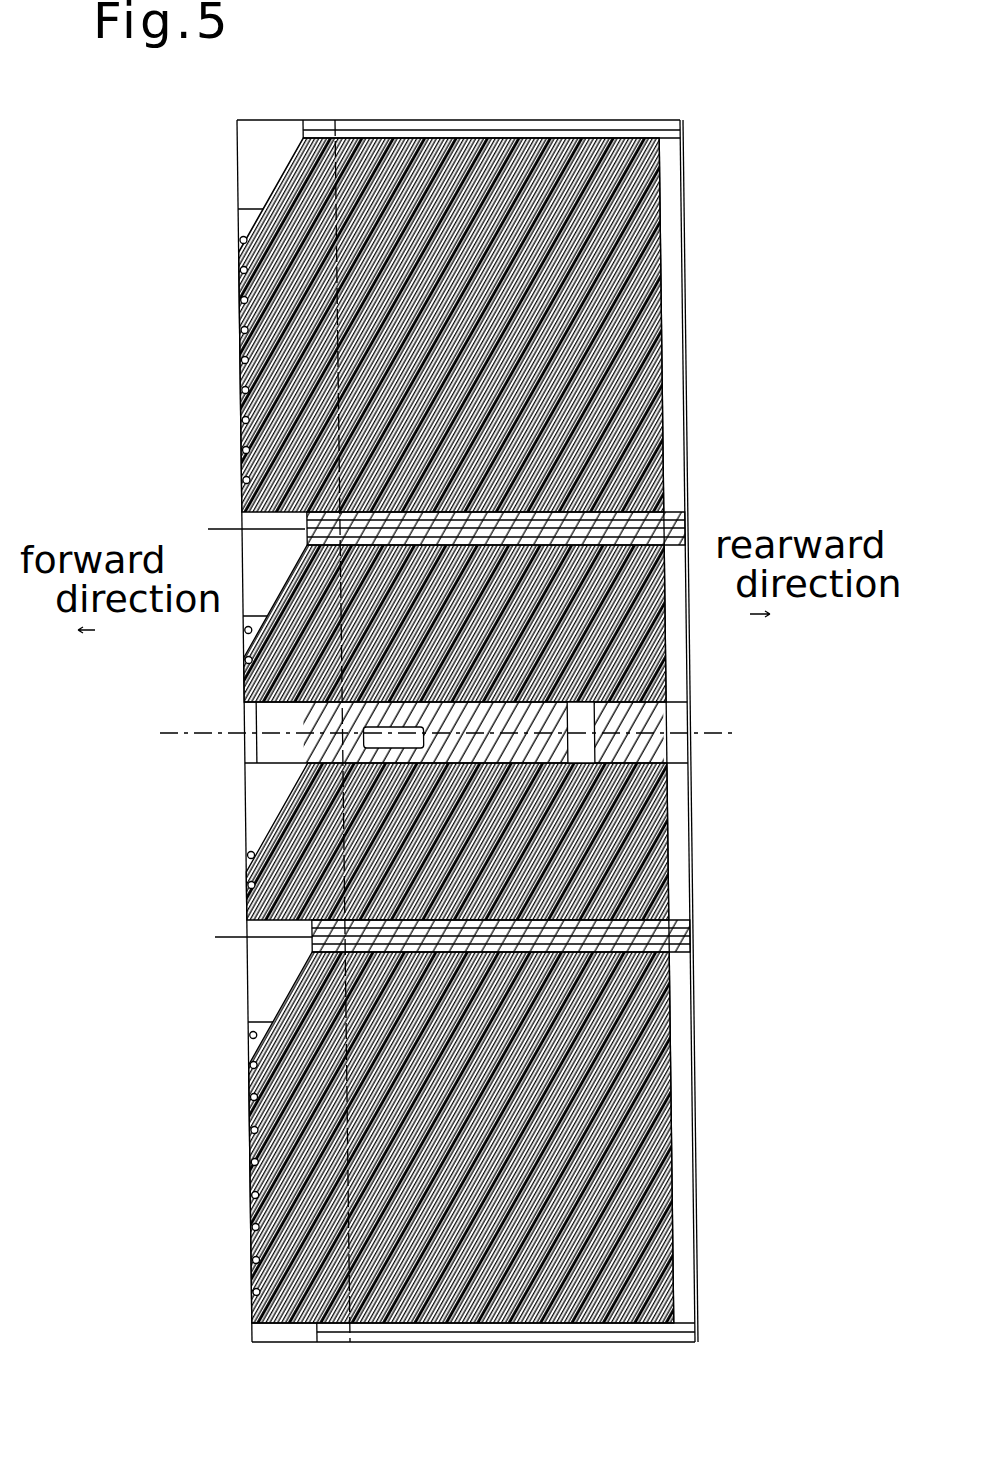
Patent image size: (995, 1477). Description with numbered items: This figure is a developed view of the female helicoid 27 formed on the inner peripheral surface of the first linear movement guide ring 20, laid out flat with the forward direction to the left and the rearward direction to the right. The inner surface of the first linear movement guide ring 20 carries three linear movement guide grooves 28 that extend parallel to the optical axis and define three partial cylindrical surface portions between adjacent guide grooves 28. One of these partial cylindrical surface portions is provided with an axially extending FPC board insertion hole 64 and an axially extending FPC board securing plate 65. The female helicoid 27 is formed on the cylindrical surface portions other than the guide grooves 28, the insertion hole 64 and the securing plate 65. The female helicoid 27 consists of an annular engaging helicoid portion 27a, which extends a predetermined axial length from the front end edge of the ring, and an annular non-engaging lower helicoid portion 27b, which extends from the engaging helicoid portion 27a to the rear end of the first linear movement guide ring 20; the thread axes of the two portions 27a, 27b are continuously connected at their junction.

The first linear movement guide ring 20 is at (690, 280).
The female helicoid 27 is at (596, 409).
The engaging helicoid portion 27a is at (338, 113).
The non-engaging helicoid portion 27b is at (665, 114).
The linear movement guide grooves 28 is at (660, 130).
The FPC board insertion hole 64 is at (545, 700).
The FPC board securing plate 65 is at (300, 710).